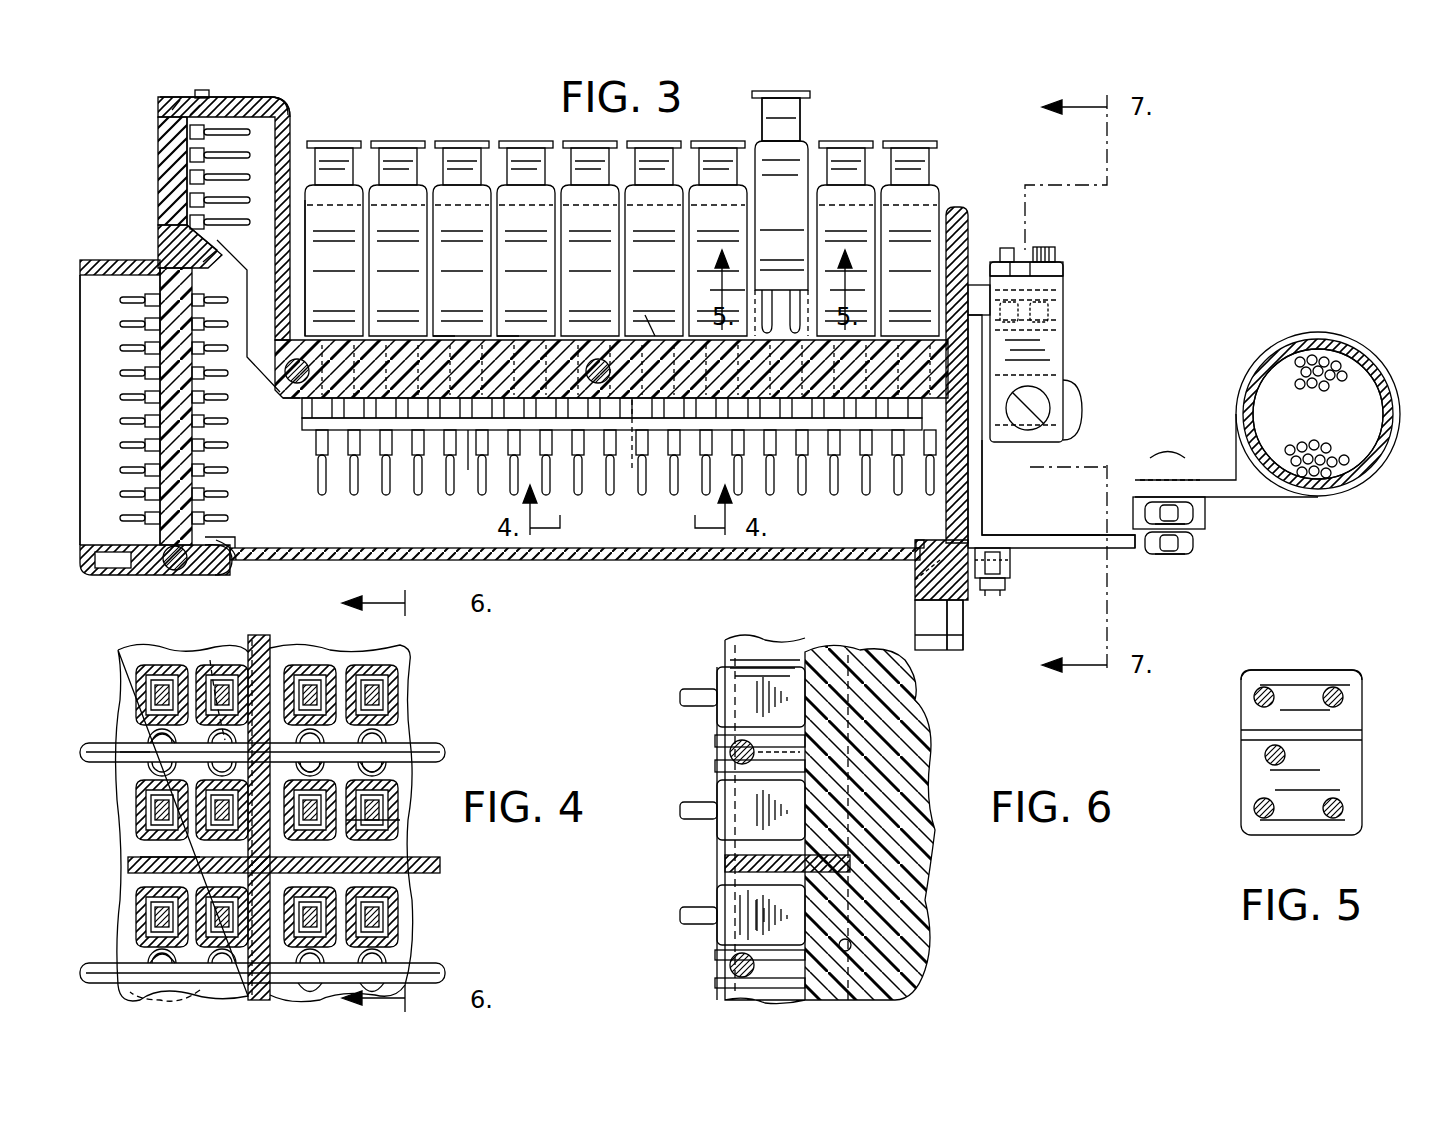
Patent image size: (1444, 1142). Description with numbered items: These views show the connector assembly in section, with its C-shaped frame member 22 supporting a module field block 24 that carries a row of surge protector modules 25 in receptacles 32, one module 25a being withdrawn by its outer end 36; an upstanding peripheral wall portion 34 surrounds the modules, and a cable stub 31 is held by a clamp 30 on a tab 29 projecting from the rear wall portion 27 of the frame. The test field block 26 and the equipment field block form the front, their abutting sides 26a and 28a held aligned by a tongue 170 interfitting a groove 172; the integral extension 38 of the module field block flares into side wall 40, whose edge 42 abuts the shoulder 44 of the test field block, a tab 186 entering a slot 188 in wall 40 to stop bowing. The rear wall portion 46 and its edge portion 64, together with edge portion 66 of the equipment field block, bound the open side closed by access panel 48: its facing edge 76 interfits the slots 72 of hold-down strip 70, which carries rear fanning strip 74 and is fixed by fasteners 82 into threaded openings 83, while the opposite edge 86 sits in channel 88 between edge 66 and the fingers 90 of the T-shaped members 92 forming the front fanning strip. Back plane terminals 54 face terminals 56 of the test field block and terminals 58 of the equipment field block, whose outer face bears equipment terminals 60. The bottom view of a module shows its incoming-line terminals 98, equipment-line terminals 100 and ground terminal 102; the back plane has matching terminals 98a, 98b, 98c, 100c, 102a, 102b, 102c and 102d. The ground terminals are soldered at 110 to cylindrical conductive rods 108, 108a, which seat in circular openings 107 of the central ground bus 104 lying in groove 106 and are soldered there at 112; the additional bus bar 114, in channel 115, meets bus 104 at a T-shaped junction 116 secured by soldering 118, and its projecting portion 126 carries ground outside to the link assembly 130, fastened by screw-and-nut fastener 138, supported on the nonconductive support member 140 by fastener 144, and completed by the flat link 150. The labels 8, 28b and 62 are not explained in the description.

In FIG. 3, the connector assembly 8 is at (72, 451).
In FIG. 3, the C-shaped frame member 22 is at (990, 520).
In FIG. 3, the module field block 24 is at (269, 392).
In FIG. 6, the module field block 24 is at (940, 745).
In FIG. 3, the surge protector modules 25 is at (460, 141).
In FIG. 5, the surge protector modules 25 is at (1358, 757).
In FIG. 3, the protector module 25a is at (800, 241).
In FIG. 5, the protector module 25a is at (1293, 670).
In FIG. 3, the test field block 26 is at (140, 160).
In FIG. 3, the abutting side of test field block 26a is at (150, 278).
In FIG. 3, the rear wall portion 27 is at (982, 455).
In FIG. 3, the abutting side of equipment field block 28a is at (95, 275).
In FIG. 3, the lower flange 28b is at (115, 578).
In FIG. 3, the ears or tabs 29 is at (1098, 538).
In FIG. 3, the clamps 30 is at (1210, 480).
In FIG. 3, the cable stub 31 is at (295, 283).
In FIG. 3, the receptacles 32 is at (525, 336).
In FIG. 3, the upstanding peripheral wall portion 34 is at (962, 222).
In FIG. 3, the outer ends of modules 36 is at (798, 118).
In FIG. 3, the integral extension 38 is at (290, 120).
In FIG. 3, the side wall 40 is at (225, 97).
In FIG. 3, the edge of side wall 42 is at (165, 112).
In FIG. 3, the shoulder portion 44 is at (175, 103).
In FIG. 3, the rear wall portion of module field block 46 is at (930, 530).
In FIG. 3, the access panel 48 is at (610, 560).
In FIG. 3, the back plane terminals 54 is at (412, 505).
In FIG. 6, the back plane terminals 54 is at (688, 874).
In FIG. 3, the test field block terminals 56 is at (258, 176).
In FIG. 3, the equipment field block terminals 58 is at (255, 458).
In FIG. 3, the equipment field terminals 60 is at (112, 376).
In FIG. 3, the upper connector pins 62 is at (152, 195).
In FIG. 3, the outer edge portion of module field block wall 64 is at (948, 630).
In FIG. 3, the outer edge portion of equipment field block 66 is at (228, 538).
In FIG. 3, the hold-down strip 70 is at (966, 610).
In FIG. 3, the elongate slots 72 is at (915, 560).
In FIG. 3, the rear fanning strip 74 is at (930, 626).
In FIG. 3, the facing edge of access panel 76 is at (915, 582).
In FIG. 3, the fasteners 82 is at (1005, 590).
In FIG. 3, the threaded openings 83 is at (1010, 570).
In FIG. 3, the opposite edge portion of access panel 86 is at (200, 570).
In FIG. 3, the second channel 88 is at (228, 558).
In FIG. 3, the fingers 90 is at (225, 565).
In FIG. 3, the T-shaped members 92 is at (105, 548).
In FIG. 5, the first pair of terminals 98 is at (1343, 697).
In FIG. 4, the back plane line terminal 98a is at (400, 700).
In FIG. 6, the back plane line terminal 98a is at (688, 690).
In FIG. 4, the back plane line terminal 98b is at (400, 930).
In FIG. 6, the back plane line terminal 98b is at (690, 925).
In FIG. 4, the back plane line terminal 98c is at (170, 667).
In FIG. 5, the second pair of terminals 100 is at (1254, 697).
In FIG. 4, the back plane equipment terminal 100c is at (160, 690).
In FIG. 5, the ground terminal 102 is at (1265, 755).
In FIG. 3, the back plane ground terminal 102a is at (585, 435).
In FIG. 4, the back plane ground terminal 102a is at (380, 760).
In FIG. 6, the back plane ground terminal 102a is at (725, 778).
In FIG. 4, the back plane ground terminal 102b is at (380, 960).
In FIG. 6, the back plane ground terminal 102b is at (725, 985).
In FIG. 4, the back plane ground terminal 102c is at (155, 735).
In FIG. 4, the solder joint 102d is at (150, 955).
In FIG. 3, the central ground bus bar 104 is at (634, 470).
In FIG. 4, the central ground bus bar 104 is at (262, 650).
In FIG. 6, the central ground bus bar 104 is at (752, 640).
In FIG. 3, the groove 106 is at (620, 360).
In FIG. 6, the groove 106 is at (851, 945).
In FIG. 4, the circular openings 107 is at (210, 660).
In FIG. 3, the conductive rods 108 is at (468, 440).
In FIG. 4, the conductive rods 108 is at (440, 748).
In FIG. 6, the conductive rods 108 is at (725, 765).
In FIG. 4, the bus rod 108a is at (445, 968).
In FIG. 6, the bus rod 108a is at (725, 968).
In FIG. 4, the solder joint 110 is at (130, 762).
In FIG. 6, the solder joint 110 is at (728, 752).
In FIG. 4, the solder joint 112 is at (290, 650).
In FIG. 3, the additional bus bar 114 is at (1010, 370).
In FIG. 4, the additional bus bar 114 is at (440, 872).
In FIG. 6, the additional bus bar 114 is at (855, 870).
In FIG. 3, the channel 115 is at (662, 330).
In FIG. 6, the channel 115 is at (820, 900).
In FIG. 4, the T-shaped junction 116 is at (160, 895).
In FIG. 4, the solder joint 118 is at (400, 835).
In FIG. 3, the projecting portion of ground bus 126 is at (1080, 395).
In FIG. 3, the conductive link assembly 130 is at (1075, 318).
In FIG. 3, the screw and nut fastener 138 is at (1040, 412).
In FIG. 3, the support member 140 is at (982, 285).
In FIG. 3, the screw and nut fastener 144 is at (1050, 247).
In FIG. 3, the flat link member 150 is at (1063, 262).
In FIG. 3, the tongue 170 is at (160, 240).
In FIG. 3, the groove 172 is at (165, 258).
In FIG. 3, the tab 186 is at (195, 93).
In FIG. 3, the slot 188 is at (279, 96).